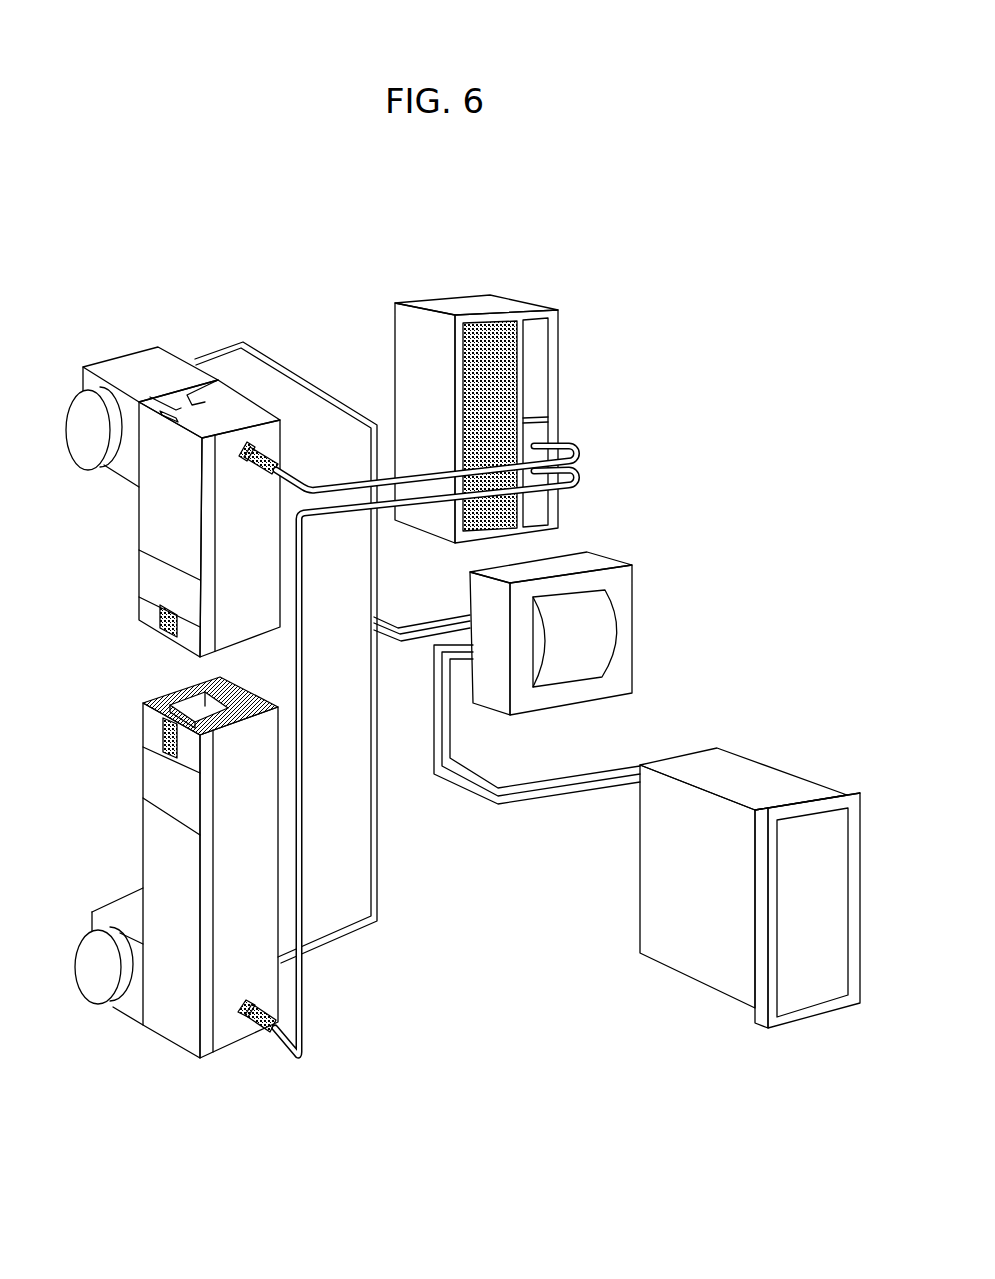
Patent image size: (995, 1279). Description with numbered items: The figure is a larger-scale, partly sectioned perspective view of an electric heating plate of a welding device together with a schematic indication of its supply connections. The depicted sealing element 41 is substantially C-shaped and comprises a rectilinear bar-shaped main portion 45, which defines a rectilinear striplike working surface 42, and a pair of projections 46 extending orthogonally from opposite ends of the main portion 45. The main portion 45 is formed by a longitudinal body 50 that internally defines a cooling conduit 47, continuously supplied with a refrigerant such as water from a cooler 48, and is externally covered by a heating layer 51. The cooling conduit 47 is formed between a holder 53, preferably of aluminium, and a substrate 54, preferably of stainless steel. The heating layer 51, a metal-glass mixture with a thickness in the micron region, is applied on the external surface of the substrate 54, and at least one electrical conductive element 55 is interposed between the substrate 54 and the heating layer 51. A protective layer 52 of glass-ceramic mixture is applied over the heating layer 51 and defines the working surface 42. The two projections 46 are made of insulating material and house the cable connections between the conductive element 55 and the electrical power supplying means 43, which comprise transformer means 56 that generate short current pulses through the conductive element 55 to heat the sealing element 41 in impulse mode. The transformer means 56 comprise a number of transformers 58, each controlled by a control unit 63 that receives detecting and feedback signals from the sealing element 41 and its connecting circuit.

The sealing element 41 is at (196, 544).
The working surface 42 is at (205, 882).
The electrical power supplying means 43 is at (590, 638).
The main portion 45 is at (258, 584).
The projections 46 is at (134, 348).
The cooling conduit 47 is at (197, 698).
The cooler 48 is at (572, 357).
The longitudinal body 50 is at (252, 961).
The heating layer 51 is at (153, 775).
The protective layer 52 is at (153, 838).
The holder 53 is at (207, 854).
The substrate 54 is at (208, 1037).
The electrical conductive element 55 is at (162, 735).
The transformer means 56 is at (606, 647).
The transformer 58 is at (553, 673).
The control unit 63 is at (672, 876).